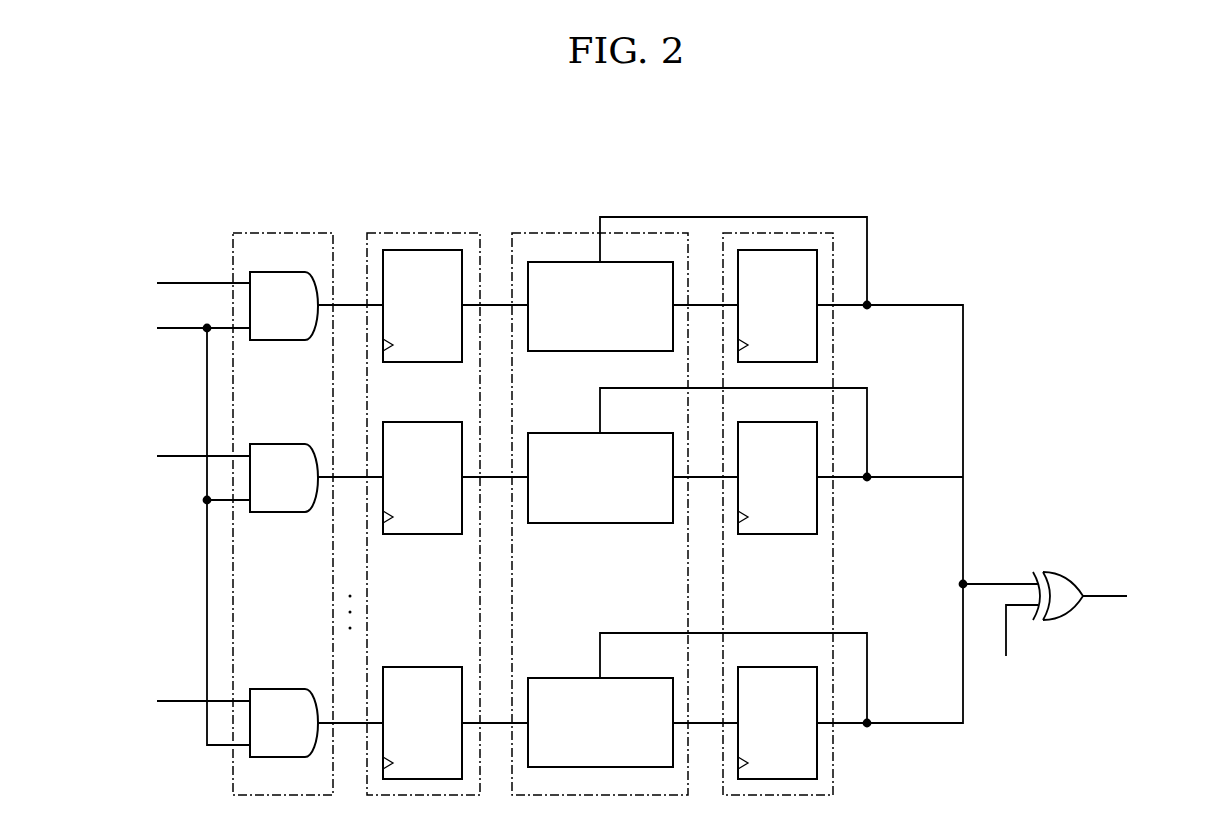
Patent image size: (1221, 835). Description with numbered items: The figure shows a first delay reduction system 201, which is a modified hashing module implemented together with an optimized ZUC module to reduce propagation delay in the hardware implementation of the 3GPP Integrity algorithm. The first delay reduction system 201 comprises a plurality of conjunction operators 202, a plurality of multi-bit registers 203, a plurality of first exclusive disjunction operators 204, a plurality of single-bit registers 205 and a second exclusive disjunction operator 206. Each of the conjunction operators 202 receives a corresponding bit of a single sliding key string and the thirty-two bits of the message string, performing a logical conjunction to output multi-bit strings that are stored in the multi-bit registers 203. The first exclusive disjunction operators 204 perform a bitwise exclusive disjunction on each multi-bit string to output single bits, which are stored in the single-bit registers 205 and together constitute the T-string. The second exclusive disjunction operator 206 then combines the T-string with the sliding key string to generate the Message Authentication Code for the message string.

The first delay reduction system 201 is at (1050, 202).
The plurality of conjunction operators 202 is at (273, 231).
The plurality of multi-bit registers 203 is at (430, 231).
The plurality of first exclusive disjunction operators 204 is at (643, 231).
The plurality of single-bit registers 205 is at (798, 231).
The second exclusive disjunction operator 206 is at (1063, 567).